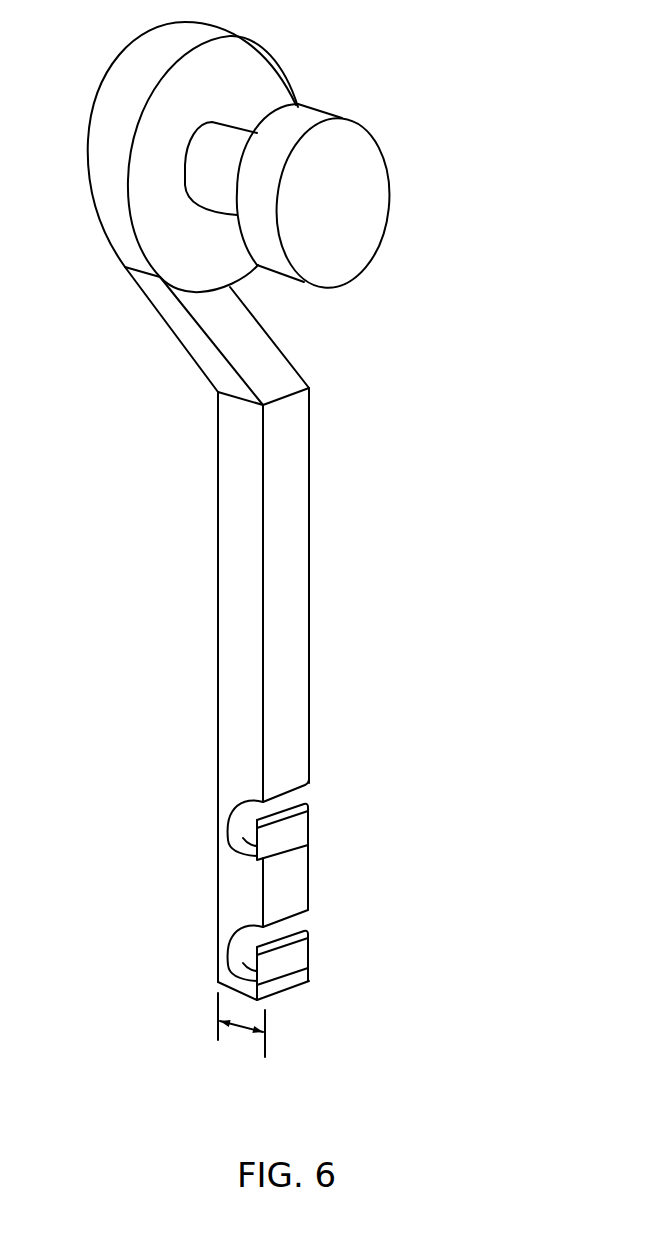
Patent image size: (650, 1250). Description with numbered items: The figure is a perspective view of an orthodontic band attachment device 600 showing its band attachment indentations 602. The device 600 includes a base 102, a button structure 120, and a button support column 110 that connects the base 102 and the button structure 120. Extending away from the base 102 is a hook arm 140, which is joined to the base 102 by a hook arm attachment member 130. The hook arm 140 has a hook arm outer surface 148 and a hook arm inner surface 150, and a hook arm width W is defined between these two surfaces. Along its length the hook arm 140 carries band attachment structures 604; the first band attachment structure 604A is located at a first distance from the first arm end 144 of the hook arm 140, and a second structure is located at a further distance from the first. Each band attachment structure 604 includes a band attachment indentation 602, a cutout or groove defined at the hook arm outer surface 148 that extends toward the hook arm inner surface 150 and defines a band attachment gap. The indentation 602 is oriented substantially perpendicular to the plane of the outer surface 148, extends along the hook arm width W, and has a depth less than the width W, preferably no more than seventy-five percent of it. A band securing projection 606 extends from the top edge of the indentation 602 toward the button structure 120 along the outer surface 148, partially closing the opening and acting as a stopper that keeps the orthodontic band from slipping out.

The orthodontic band attachment device 600 is at (427, 48).
The base 102 is at (124, 88).
The button support column 110 is at (223, 138).
The button structure 120 is at (360, 220).
The hook arm attachment member 130 is at (182, 323).
The hook arm 140 is at (311, 501).
The first arm end 144 is at (310, 388).
The hook arm outer surface 148 is at (290, 597).
The hook arm inner surface 150 is at (218, 560).
The band attachment structures 604 is at (115, 825).
The first band attachment structure 604A is at (232, 826).
The band attachment indentation 602 is at (280, 840).
The band securing projection 606 is at (232, 822).
The hook arm width W is at (242, 1027).